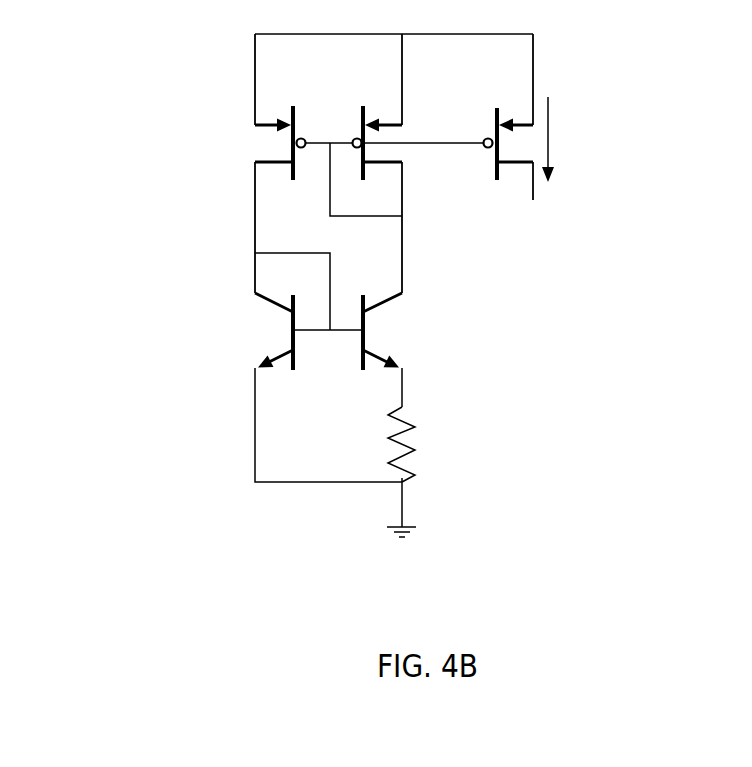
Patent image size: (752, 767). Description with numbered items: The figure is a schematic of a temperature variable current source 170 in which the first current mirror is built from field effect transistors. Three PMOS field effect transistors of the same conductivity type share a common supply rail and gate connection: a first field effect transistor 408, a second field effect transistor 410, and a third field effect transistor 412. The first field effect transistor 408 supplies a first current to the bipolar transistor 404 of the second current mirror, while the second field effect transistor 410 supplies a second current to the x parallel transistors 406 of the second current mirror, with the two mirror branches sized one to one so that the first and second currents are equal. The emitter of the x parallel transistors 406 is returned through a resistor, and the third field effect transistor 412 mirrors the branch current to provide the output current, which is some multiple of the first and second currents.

The PTAT current generator circuit 170 is at (112, 61).
The transistor Q1 404 is at (292, 343).
The x transistors Q2 406 is at (366, 352).
The first field effect transistor 408 is at (255, 167).
The second field effect transistor 410 is at (402, 170).
The third field effect transistor 412 is at (535, 190).